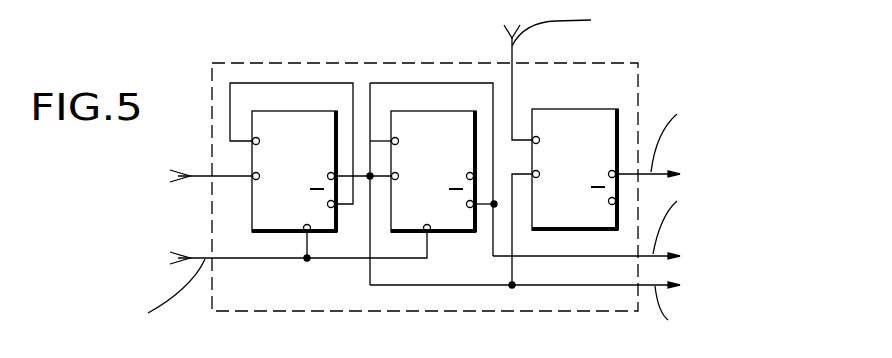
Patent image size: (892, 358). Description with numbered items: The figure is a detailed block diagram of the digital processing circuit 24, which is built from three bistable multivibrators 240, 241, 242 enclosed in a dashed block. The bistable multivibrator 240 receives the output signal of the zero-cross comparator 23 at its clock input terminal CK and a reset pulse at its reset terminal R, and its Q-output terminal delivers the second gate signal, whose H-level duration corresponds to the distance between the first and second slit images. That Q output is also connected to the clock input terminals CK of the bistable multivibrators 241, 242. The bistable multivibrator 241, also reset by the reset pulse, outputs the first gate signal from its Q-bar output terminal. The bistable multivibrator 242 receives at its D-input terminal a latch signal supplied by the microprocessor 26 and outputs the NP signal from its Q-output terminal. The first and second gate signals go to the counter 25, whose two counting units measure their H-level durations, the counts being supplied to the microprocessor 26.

The digital processing circuit 24 is at (212, 88).
The bistable multivibrator 240 is at (288, 111).
The bistable multivibrator 241 is at (432, 111).
The bistable multivibrator 242 is at (581, 109).
The zero-cross comparator 23 is at (192, 179).
The microprocessor 26 is at (471, 174).
The counter 25 is at (612, 274).